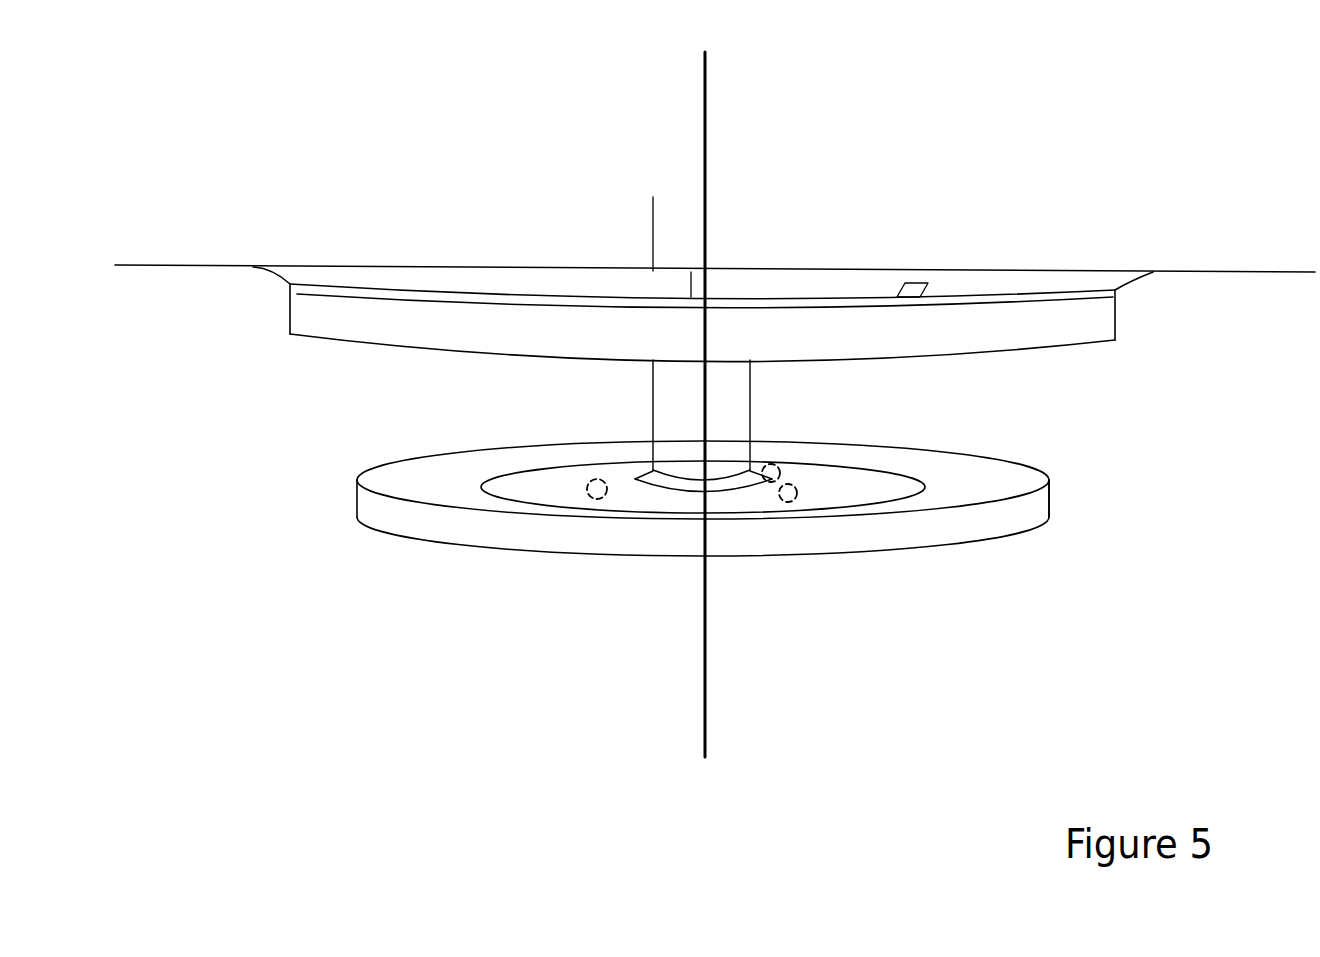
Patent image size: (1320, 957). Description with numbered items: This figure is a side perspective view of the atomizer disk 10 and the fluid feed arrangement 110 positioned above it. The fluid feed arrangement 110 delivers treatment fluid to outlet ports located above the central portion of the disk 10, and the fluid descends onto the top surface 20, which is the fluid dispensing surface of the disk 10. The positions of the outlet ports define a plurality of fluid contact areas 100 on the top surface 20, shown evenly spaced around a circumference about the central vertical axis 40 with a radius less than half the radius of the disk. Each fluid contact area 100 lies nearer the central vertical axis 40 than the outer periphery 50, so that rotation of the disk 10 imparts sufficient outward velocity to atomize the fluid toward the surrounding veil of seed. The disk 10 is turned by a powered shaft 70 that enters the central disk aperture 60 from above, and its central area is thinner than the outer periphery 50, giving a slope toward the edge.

The disk 10 is at (357, 524).
The top surface 20 is at (958, 464).
The central vertical axis 40 is at (714, 727).
The outer periphery 50 is at (1041, 470).
The central disk aperture 60 is at (649, 458).
The powered shaft 70 is at (754, 394).
The fluid contact areas 100 is at (592, 474).
The fluid feed arrangement 110 is at (377, 352).